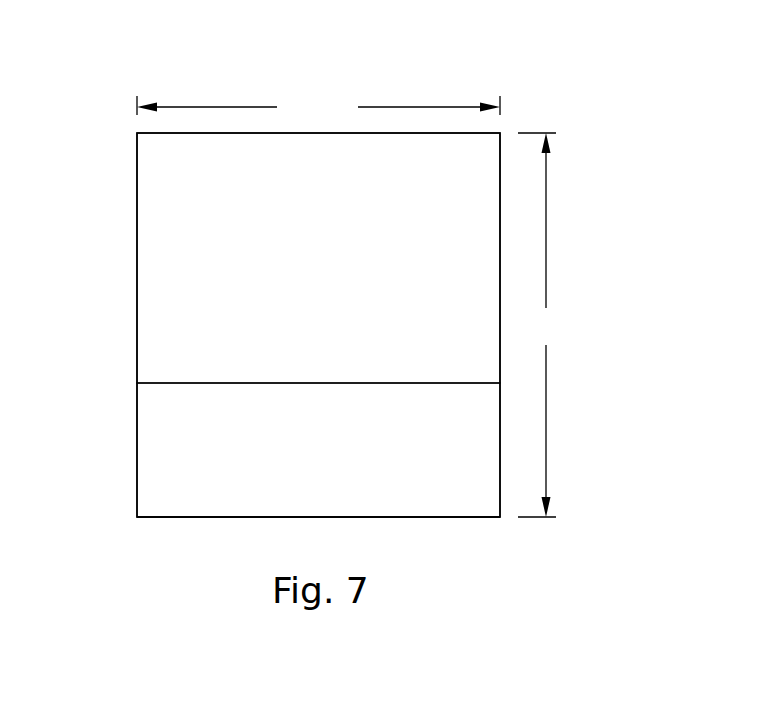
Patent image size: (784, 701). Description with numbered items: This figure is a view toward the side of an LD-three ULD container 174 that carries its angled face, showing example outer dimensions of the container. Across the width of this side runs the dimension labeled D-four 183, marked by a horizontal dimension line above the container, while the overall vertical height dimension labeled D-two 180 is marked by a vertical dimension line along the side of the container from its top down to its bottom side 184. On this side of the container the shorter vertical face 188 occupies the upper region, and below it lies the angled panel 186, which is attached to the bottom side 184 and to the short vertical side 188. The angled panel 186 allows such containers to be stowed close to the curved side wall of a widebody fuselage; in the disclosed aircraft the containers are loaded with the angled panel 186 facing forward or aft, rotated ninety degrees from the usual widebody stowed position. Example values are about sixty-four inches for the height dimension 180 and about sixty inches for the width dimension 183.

The LD-3 ULD container 174 is at (576, 70).
The overall vertical height dimension D2 180 is at (546, 240).
The dimension D4 183 is at (405, 107).
The bottom side 184 is at (248, 518).
The angled panel 186 is at (150, 470).
The shorter vertical face 188 is at (176, 317).